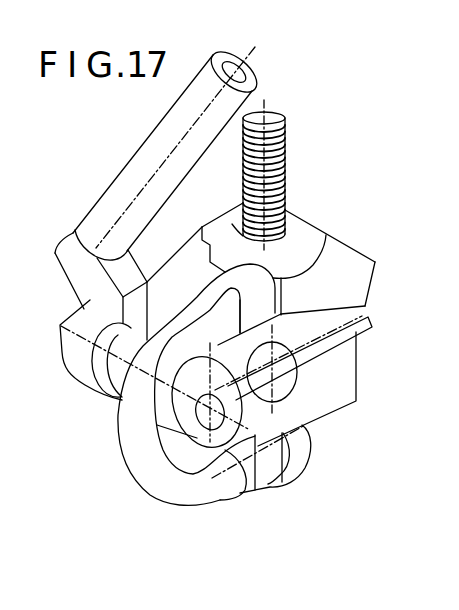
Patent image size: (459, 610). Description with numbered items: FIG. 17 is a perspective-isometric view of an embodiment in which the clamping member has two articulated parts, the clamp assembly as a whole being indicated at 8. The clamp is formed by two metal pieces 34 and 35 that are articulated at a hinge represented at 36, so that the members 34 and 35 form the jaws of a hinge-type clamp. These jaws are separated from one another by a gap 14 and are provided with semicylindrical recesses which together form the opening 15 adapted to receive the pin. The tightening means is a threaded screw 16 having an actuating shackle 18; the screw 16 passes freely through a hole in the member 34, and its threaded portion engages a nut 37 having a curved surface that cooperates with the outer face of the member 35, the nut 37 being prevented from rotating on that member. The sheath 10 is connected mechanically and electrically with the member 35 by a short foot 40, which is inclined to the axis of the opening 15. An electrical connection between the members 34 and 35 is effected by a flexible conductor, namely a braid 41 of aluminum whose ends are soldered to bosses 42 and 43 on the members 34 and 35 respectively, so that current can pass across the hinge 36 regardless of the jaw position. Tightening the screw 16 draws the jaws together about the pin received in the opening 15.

The clamping device 8 is at (97, 442).
The sheath 10 is at (132, 167).
The gap 14 is at (338, 342).
The opening 15 is at (226, 349).
The threaded screw 16 is at (280, 173).
The actuating shackle 18 is at (297, 465).
The metal piece 34 is at (342, 380).
The metal piece 35 is at (352, 258).
The hinge 36 is at (207, 450).
The nut 37 is at (232, 222).
The short foot 40 is at (90, 283).
The braid 41 is at (142, 470).
The boss 42 is at (241, 497).
The boss 43 is at (237, 280).